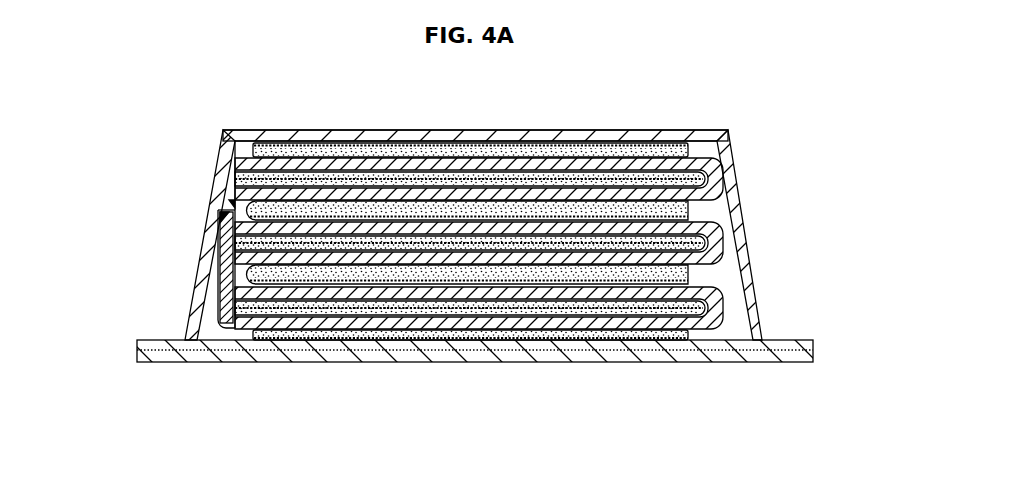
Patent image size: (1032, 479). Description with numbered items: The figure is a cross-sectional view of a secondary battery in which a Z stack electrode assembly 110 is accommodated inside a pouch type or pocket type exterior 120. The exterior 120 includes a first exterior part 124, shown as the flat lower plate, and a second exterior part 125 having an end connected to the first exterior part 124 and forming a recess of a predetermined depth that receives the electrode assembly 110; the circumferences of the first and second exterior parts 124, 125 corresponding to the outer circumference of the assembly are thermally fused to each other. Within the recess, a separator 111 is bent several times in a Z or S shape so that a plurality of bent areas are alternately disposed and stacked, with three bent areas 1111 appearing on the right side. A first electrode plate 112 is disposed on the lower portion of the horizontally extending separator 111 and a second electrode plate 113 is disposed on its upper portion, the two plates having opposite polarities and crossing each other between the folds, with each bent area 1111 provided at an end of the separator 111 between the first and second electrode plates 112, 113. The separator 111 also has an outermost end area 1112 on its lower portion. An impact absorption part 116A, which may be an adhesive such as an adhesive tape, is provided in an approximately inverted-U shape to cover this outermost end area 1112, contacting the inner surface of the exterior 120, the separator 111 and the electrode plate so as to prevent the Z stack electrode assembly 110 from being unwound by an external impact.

The Z stack electrode assembly 110 is at (460, 255).
The separator 111 is at (633, 160).
The bent area 1111 is at (230, 204).
The outermost end area 1112 is at (222, 330).
The first electrode plate 112 is at (343, 350).
The second electrode plate 113 is at (441, 314).
The impact absorption part 116A is at (218, 230).
The exterior 120 is at (522, 198).
The first exterior part 124 is at (718, 362).
The second exterior part 125 is at (748, 277).